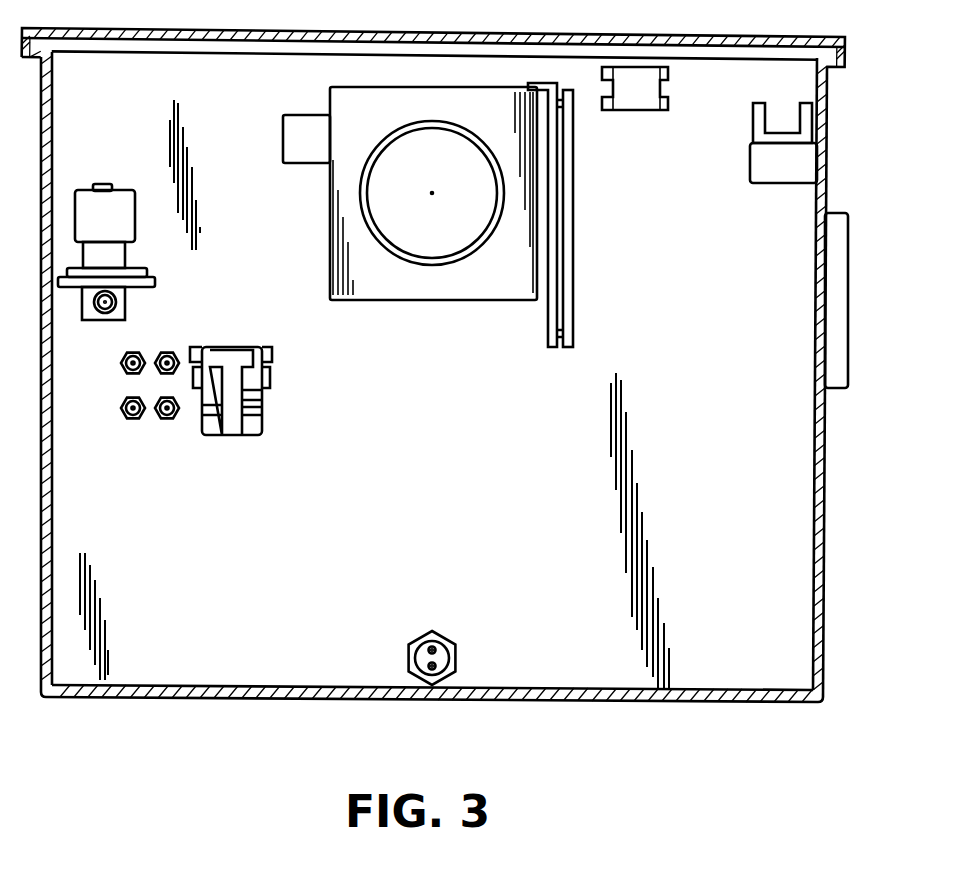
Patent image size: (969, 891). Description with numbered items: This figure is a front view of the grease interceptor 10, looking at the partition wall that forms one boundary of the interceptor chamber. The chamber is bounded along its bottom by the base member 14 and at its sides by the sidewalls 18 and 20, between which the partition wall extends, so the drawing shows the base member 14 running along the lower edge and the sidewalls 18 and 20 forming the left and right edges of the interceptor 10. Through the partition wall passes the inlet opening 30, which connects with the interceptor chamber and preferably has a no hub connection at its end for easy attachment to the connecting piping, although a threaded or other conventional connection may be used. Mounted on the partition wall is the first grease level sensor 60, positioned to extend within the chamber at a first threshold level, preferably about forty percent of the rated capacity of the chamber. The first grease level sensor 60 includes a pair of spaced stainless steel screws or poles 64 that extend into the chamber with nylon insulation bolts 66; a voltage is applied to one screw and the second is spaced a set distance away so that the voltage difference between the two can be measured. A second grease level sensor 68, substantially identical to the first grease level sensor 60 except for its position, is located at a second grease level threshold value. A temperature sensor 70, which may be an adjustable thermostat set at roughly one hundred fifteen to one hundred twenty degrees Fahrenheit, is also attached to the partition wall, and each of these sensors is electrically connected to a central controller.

The grease interceptor 10 is at (767, 703).
The base member 14 is at (197, 690).
The sidewall 18 is at (826, 633).
The sidewall 20 is at (52, 508).
The inlet opening 30 is at (408, 264).
The first grease level sensor 60 is at (114, 363).
The stainless steel screws or poles 64 is at (136, 353).
The nylon insulation bolts 66 is at (167, 372).
The second grease level sensor 68 is at (126, 424).
The temperature sensor 70 is at (264, 418).